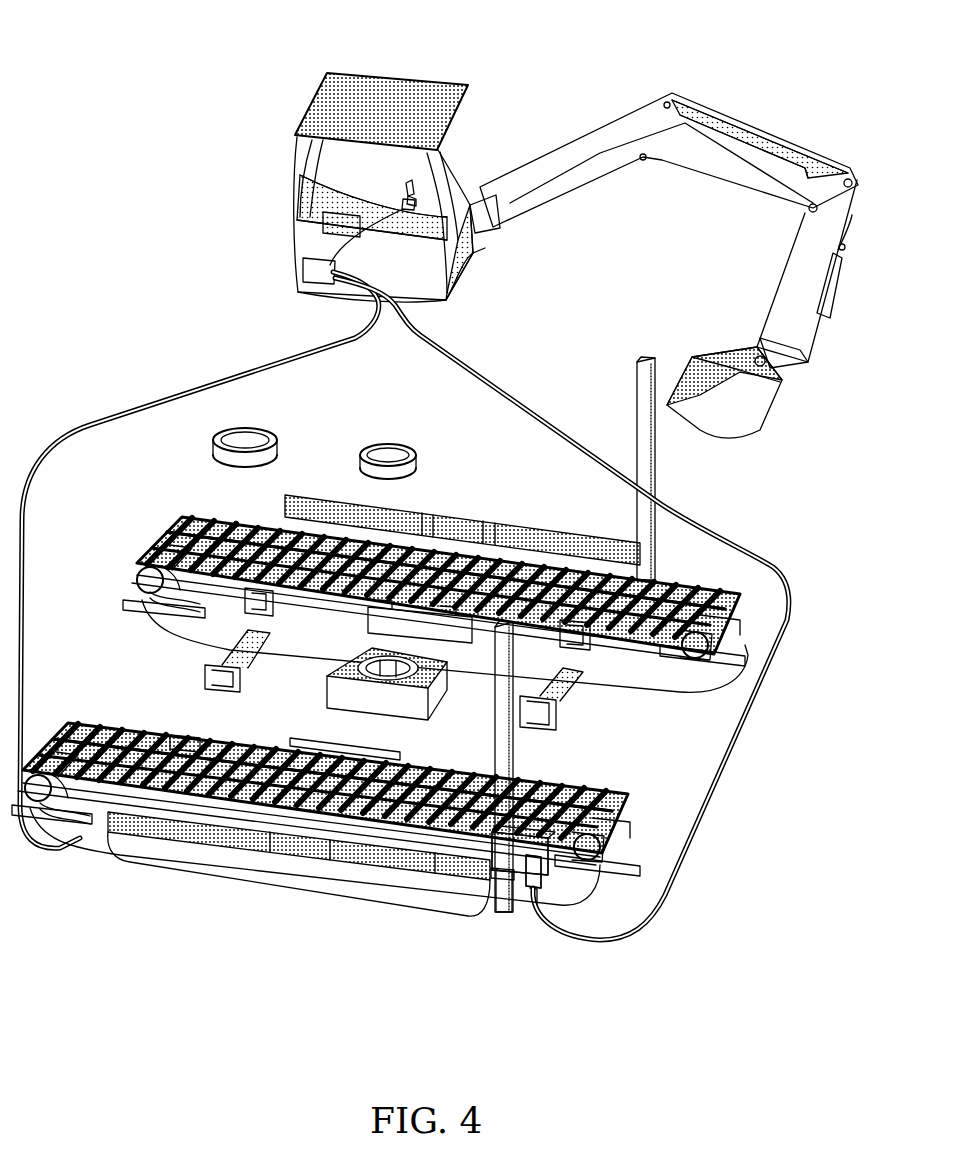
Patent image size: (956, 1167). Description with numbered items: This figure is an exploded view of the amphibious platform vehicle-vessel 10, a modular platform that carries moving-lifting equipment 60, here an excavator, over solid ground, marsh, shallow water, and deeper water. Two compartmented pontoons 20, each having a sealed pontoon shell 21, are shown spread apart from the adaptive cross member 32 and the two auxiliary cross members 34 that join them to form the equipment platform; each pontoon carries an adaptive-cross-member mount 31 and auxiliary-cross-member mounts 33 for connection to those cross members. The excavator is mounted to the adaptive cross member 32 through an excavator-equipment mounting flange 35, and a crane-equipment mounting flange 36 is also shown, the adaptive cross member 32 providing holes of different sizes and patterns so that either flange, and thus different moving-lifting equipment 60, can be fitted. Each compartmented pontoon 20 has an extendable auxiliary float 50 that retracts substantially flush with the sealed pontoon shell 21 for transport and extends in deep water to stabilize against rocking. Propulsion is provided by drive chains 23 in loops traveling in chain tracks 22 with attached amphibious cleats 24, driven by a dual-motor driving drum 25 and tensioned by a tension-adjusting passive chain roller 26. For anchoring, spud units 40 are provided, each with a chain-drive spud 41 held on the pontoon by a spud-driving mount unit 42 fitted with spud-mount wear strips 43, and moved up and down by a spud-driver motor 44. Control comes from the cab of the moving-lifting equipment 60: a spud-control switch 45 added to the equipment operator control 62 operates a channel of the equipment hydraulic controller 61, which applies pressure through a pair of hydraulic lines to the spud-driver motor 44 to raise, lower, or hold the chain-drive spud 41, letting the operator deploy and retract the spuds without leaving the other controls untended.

The amphibious platform vehicle-vessel 10 is at (82, 42).
The compartmented pontoon 20 is at (118, 510).
The sealed pontoon shell 21 is at (172, 640).
The chain track 22 is at (218, 520).
The drive chain 23 is at (233, 522).
The amphibious cleat 24 is at (240, 525).
The dual-motor driving drum 25 is at (180, 516).
The tension-adjusting passive chain roller 26 is at (705, 655).
The adaptive-cross-member mount 31 is at (372, 622).
The adaptive cross member 32 is at (433, 700).
The auxiliary-cross-member mount 33 is at (270, 606).
The auxiliary cross member 34 is at (232, 686).
The excavator-equipment mounting flange 35 is at (412, 452).
The crane-equipment mounting flange 36 is at (275, 438).
The spud unit 40 is at (665, 553).
The chain-drive spud 41 is at (500, 915).
The spud-driving mount unit 42 is at (490, 905).
The spud-mount wear strip 43 is at (520, 853).
The spud-driver motor 44 is at (542, 878).
The spud-control switch 45 is at (408, 185).
The extendable auxiliary float 50 is at (525, 518).
The moving-lifting equipment 60 is at (553, 102).
The equipment hydraulic controller 61 is at (300, 272).
The equipment operator control 62 is at (402, 204).